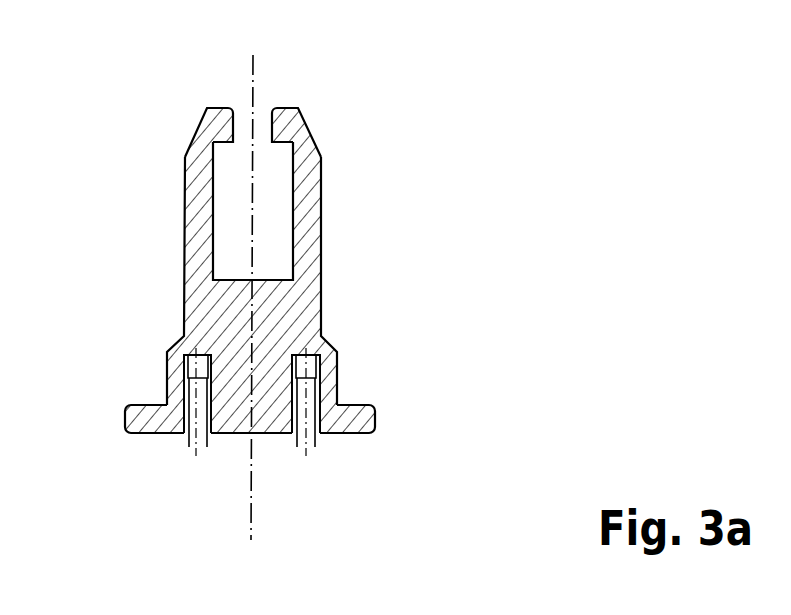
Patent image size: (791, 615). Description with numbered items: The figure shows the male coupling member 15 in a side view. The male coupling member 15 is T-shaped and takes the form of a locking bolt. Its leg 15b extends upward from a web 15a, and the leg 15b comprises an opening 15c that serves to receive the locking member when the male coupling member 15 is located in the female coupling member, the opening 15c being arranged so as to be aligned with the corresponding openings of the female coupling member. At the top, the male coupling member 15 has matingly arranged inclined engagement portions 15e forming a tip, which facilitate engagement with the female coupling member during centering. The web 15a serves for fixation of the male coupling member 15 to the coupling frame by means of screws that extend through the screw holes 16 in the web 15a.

The male coupling member 15 is at (135, 458).
The web 15a is at (375, 413).
The leg 15b is at (338, 262).
The opening 15c is at (283, 163).
The inclined engagement portions 15e is at (187, 142).
The screw holes 16 is at (188, 433).